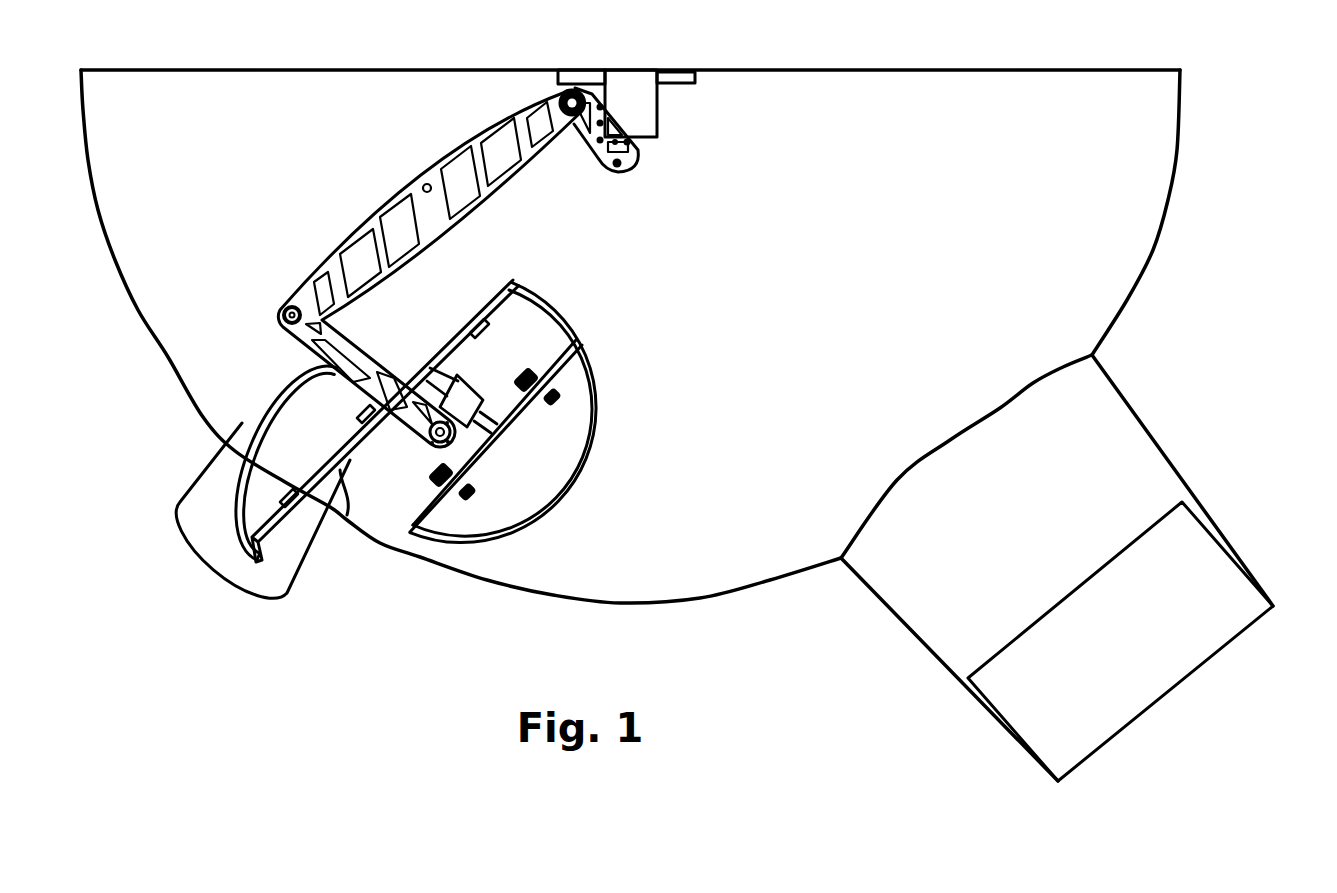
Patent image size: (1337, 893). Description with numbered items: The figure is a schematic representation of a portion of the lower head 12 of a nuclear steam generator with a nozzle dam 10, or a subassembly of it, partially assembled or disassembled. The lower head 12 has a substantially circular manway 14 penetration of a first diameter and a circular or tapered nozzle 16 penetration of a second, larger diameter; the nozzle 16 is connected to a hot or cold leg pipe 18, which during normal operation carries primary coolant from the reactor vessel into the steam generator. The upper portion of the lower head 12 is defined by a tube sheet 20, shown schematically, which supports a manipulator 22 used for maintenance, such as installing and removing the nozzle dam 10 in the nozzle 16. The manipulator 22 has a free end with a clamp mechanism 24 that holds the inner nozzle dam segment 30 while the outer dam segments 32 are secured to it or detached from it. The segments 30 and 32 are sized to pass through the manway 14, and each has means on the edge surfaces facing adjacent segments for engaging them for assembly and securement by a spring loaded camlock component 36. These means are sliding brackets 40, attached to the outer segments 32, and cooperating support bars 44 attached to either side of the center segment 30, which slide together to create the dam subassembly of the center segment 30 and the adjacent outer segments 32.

The nozzle dam 10 is at (620, 322).
The lower head 12 is at (788, 139).
The manway 14 is at (207, 468).
The nozzle 16 is at (866, 590).
The hot or cold leg pipe 18 is at (1240, 563).
The tube sheet 20 is at (955, 69).
The manipulator 22 is at (439, 165).
The clamp mechanism 24 is at (462, 376).
The inner nozzle dam segment 30 is at (542, 290).
The outer nozzle dam segment 32 is at (590, 456).
The spring loaded camlock component 36 is at (566, 396).
The sliding bracket 40 is at (347, 515).
The support bar 44 is at (497, 292).